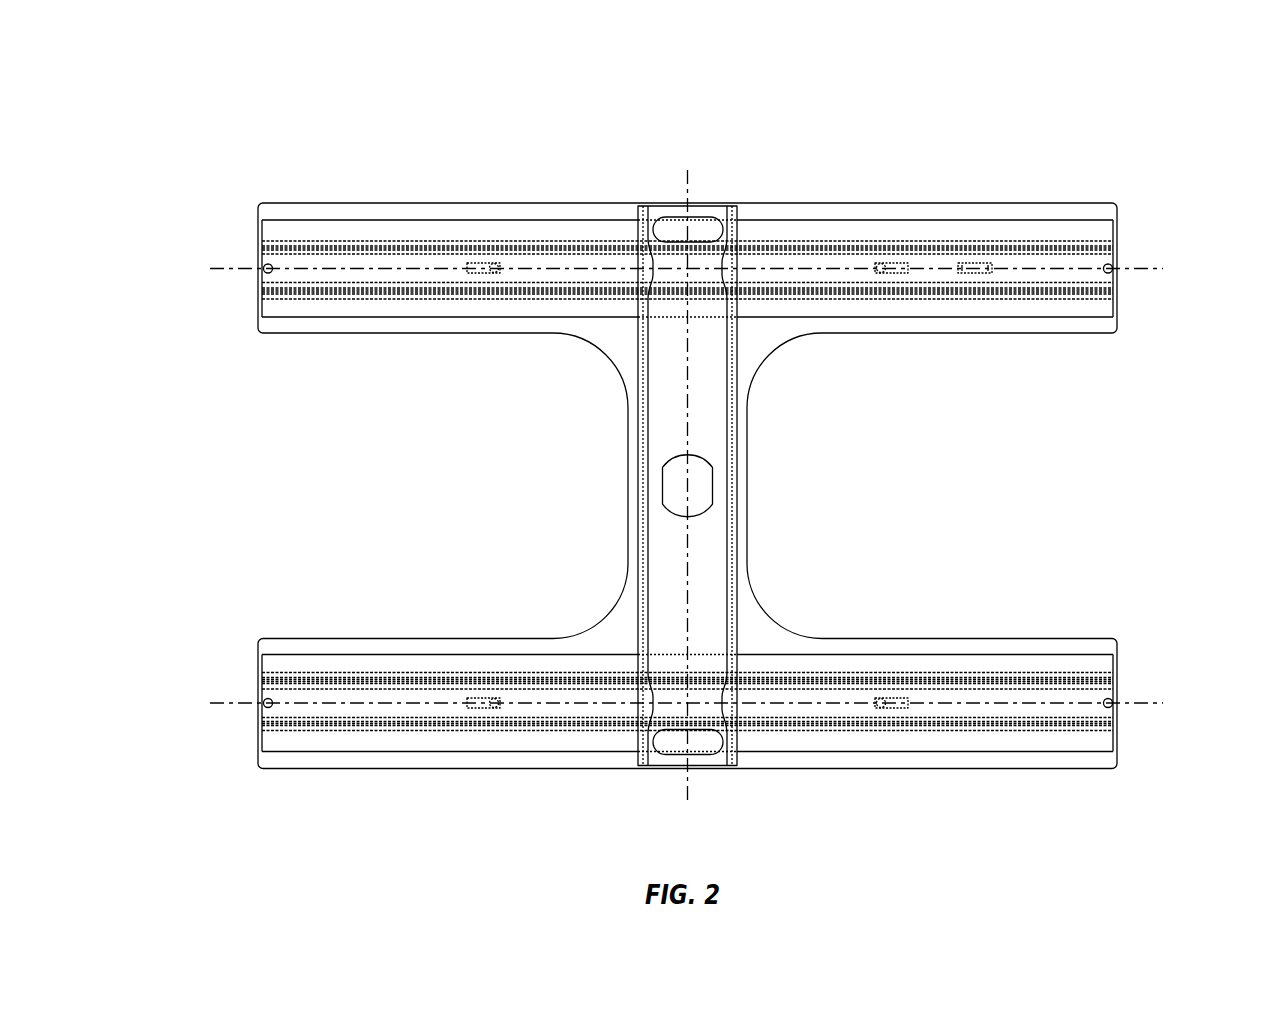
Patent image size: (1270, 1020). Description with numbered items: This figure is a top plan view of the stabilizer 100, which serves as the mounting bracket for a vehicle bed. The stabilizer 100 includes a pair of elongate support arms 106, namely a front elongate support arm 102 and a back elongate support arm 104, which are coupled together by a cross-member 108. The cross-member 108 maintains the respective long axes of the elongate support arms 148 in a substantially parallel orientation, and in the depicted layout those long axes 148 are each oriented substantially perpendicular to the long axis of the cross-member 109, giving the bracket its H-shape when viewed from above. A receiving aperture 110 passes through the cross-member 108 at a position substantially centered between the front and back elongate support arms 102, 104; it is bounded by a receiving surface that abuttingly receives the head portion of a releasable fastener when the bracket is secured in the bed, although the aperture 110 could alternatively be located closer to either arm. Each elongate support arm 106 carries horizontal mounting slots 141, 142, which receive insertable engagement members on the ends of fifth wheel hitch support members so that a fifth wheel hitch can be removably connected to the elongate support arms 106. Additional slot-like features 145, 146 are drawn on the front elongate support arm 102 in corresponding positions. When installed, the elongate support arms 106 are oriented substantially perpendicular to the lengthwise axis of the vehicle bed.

The stabilizer 100 is at (972, 67).
The front elongate support arm 102 is at (255, 224).
The back elongate support arm 104 is at (255, 745).
The pair of elongate support arms 106 is at (255, 325).
The cross-member 108 is at (714, 548).
The long axis of the cross-member 109 is at (686, 170).
The receiving aperture 110 is at (661, 482).
The horizontal mounting slot 141 is at (469, 716).
The horizontal mounting slot 142 is at (908, 716).
The fastener 145 is at (906, 258).
The fastener 146 is at (468, 258).
The long axes of the elongate support arms 148 is at (1157, 268).